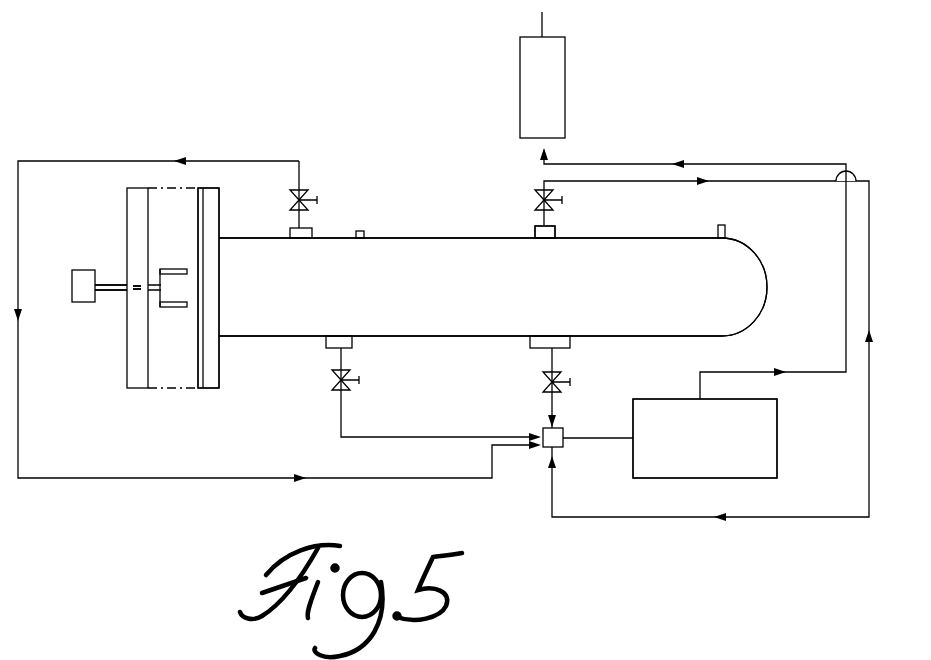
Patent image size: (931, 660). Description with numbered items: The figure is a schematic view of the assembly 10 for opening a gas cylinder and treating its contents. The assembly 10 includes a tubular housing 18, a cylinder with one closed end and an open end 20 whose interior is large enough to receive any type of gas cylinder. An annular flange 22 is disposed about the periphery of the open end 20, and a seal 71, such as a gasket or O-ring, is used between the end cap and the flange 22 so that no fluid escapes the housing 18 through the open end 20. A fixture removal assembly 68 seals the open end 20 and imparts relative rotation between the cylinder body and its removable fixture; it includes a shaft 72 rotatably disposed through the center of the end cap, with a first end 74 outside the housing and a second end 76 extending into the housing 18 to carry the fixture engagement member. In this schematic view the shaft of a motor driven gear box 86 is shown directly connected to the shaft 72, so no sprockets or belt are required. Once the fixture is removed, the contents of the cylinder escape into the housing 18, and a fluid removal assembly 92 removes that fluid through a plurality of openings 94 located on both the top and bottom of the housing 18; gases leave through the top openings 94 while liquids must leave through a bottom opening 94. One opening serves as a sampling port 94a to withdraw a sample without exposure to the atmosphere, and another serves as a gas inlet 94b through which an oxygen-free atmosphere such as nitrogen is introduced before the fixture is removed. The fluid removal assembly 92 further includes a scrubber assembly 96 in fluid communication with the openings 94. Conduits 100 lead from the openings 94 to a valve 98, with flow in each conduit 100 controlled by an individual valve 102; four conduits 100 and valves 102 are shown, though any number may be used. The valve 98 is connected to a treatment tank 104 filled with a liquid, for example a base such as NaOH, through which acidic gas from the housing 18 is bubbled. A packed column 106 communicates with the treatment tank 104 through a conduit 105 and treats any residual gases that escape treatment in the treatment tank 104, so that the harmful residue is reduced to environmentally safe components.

The assembly 10 is at (410, 228).
The tubular housing 18 is at (727, 332).
The open end 20 is at (221, 237).
The annular flange 22 is at (213, 390).
The fixture removal assembly 68 is at (120, 282).
The seal 71 is at (198, 375).
The shaft 72 is at (112, 292).
The first end 74 is at (97, 292).
The second end 76 is at (160, 272).
The motor driven gear box 86 is at (80, 280).
The fluid removal assembly 92 is at (565, 230).
The openings 94 is at (297, 240).
The sampling port 94a is at (725, 233).
The gas inlet 94b is at (360, 242).
The scrubber assembly 96 is at (785, 425).
The valve 98 is at (557, 448).
The conduits 100 is at (452, 476).
The valves 102 is at (303, 200).
The treatment tank 104 is at (775, 465).
The conduit 105 is at (778, 164).
The packed column 106 is at (553, 53).